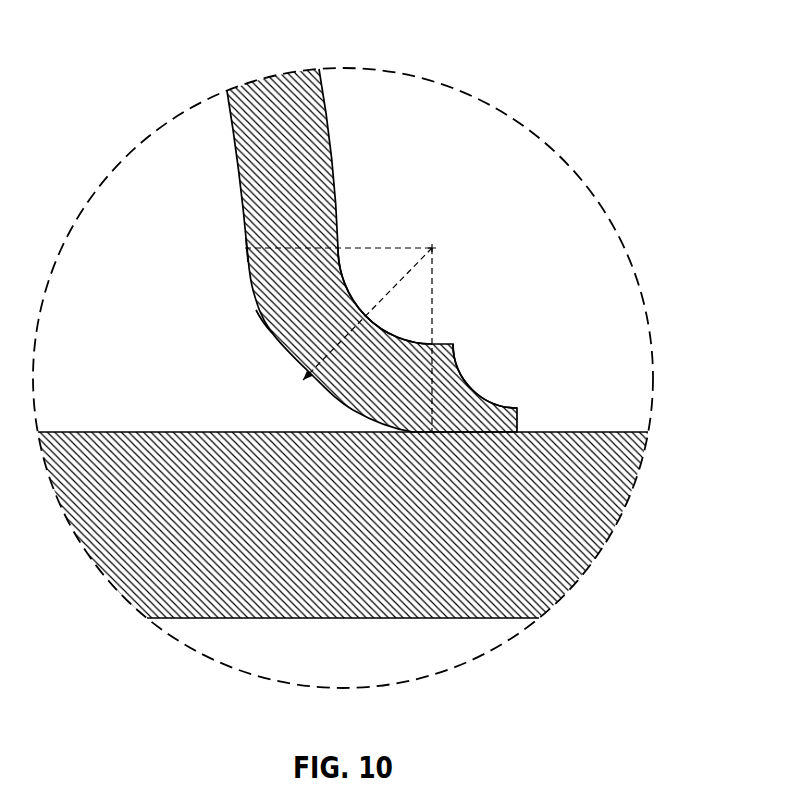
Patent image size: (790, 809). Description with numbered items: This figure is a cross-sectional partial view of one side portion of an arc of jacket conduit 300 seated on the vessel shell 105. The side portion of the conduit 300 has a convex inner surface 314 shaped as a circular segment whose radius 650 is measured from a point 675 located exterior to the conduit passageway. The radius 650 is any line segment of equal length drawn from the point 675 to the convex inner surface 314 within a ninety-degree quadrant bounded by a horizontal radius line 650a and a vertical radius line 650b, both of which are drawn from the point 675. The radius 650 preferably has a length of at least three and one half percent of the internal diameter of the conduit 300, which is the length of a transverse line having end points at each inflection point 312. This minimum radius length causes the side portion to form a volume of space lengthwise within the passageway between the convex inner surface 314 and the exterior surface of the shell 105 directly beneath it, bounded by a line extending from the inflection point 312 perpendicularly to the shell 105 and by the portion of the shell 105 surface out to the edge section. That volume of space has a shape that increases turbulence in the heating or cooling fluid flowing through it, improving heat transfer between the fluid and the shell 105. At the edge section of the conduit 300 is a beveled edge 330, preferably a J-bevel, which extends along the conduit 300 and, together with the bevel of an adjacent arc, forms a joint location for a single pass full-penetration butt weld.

The conduit 300 is at (315, 130).
The inflection point 312 is at (245, 248).
The convex inner surface 314 is at (265, 332).
The beveled edge 330 is at (475, 388).
The radius 650 is at (413, 272).
The horizontal radius line 650a is at (345, 248).
The vertical radius line 650b is at (433, 302).
The point 675 is at (432, 248).
The shell 105 is at (358, 608).